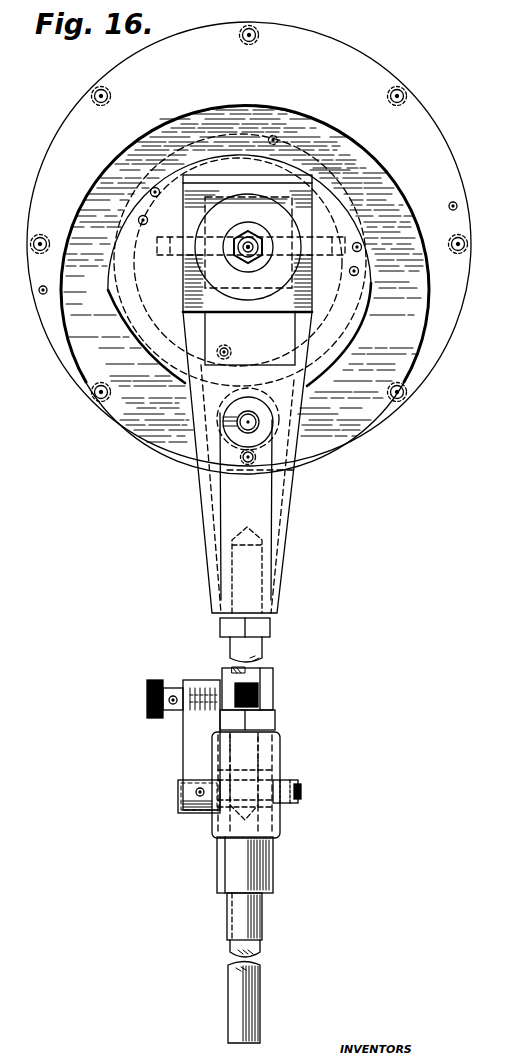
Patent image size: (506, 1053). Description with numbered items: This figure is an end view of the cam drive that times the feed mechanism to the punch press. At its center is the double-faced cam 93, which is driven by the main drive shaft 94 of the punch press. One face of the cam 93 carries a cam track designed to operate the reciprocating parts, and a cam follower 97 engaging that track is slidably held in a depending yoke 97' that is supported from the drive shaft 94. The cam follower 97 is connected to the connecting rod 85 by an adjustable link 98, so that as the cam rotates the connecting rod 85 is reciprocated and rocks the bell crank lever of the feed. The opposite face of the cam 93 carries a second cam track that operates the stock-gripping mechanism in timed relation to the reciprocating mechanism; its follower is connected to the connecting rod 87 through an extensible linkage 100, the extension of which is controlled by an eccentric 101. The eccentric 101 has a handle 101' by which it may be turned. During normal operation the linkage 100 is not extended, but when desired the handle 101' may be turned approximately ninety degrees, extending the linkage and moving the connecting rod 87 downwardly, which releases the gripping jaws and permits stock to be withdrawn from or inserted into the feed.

The double-faced cam 93 is at (68, 132).
The main drive shaft 94 is at (252, 252).
The cam follower 97 is at (265, 462).
The depending yoke 97' is at (217, 489).
The adjustable link 98 is at (268, 674).
The extensible linkage 100 is at (228, 672).
The eccentric 101 is at (175, 807).
The handle 101' is at (162, 745).
The connecting rod 85 is at (238, 917).
The connecting rod 87 is at (235, 947).